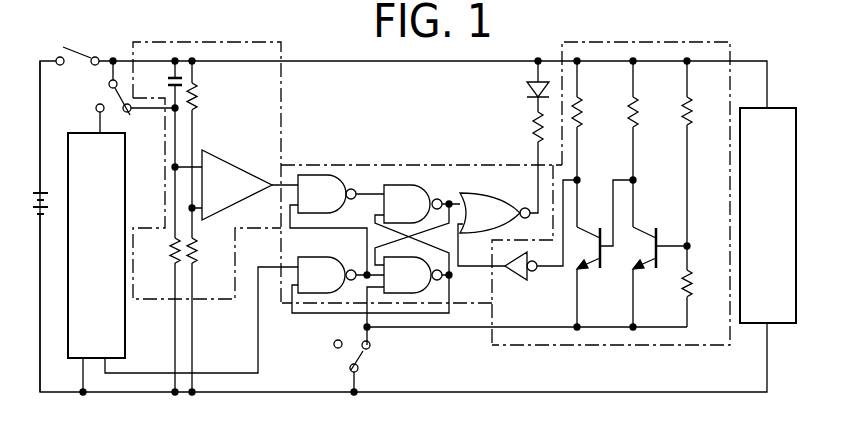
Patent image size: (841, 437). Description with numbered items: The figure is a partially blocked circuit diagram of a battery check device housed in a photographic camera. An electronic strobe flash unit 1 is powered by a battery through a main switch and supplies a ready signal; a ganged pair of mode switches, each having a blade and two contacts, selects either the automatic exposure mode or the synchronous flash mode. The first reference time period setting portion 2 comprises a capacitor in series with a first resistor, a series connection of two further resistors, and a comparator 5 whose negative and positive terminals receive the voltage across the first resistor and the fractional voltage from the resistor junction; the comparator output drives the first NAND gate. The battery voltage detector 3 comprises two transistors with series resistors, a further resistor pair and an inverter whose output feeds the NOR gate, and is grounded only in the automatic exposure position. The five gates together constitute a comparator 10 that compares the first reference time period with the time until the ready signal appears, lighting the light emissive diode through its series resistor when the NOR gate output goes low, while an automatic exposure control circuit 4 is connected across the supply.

The electronic strobe flash unit 1 is at (68, 357).
The first reference time period setting portion 2 is at (282, 108).
The battery voltage detector 3 is at (629, 191).
The automatic exposure control circuit 4 is at (780, 325).
The comparator 5 is at (229, 158).
The comparator 10 is at (373, 164).